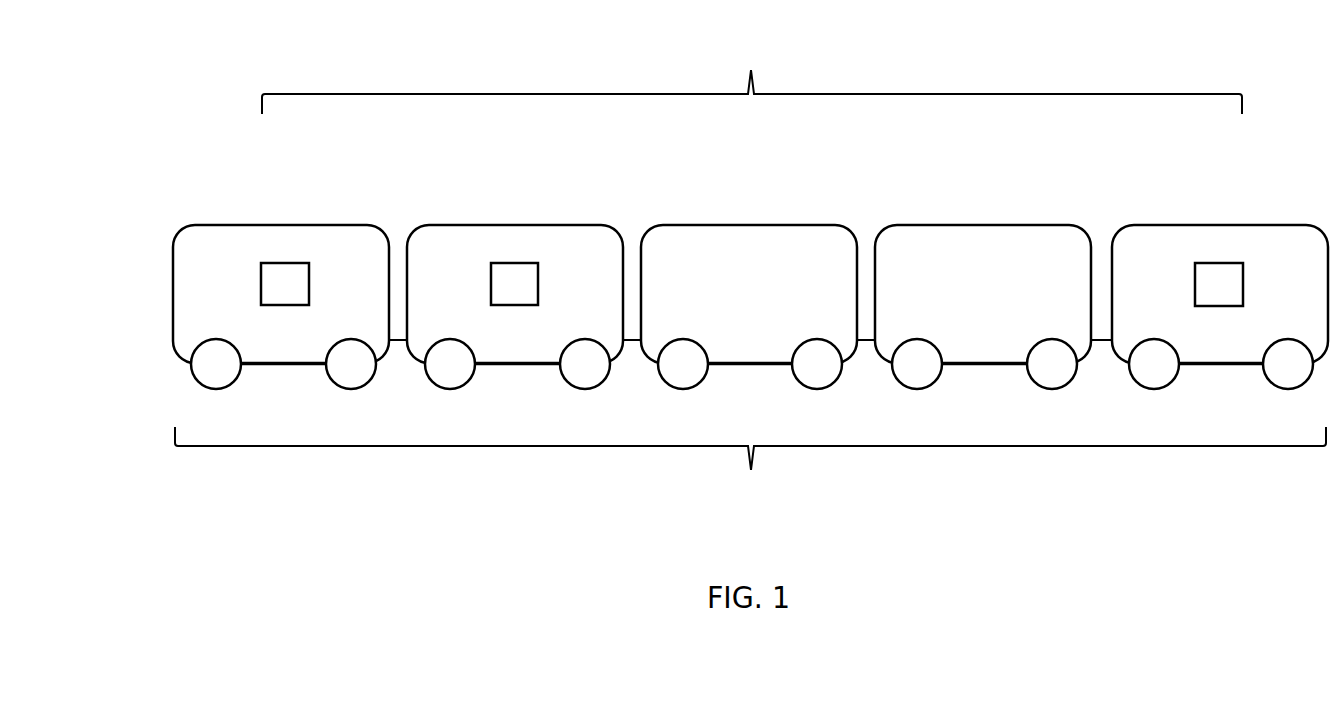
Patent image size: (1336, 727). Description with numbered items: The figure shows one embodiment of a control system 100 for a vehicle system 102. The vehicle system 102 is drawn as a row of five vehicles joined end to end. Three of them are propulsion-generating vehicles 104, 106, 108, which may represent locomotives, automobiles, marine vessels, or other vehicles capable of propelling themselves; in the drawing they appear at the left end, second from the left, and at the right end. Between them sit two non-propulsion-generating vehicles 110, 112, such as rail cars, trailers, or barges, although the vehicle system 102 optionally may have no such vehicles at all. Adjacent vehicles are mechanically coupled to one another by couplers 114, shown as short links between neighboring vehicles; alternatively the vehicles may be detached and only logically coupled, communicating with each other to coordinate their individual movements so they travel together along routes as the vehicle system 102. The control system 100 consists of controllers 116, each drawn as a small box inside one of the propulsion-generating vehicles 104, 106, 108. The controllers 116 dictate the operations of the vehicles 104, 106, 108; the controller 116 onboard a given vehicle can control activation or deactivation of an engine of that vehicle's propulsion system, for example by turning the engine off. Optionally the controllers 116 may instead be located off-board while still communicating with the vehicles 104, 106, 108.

The control system 100 is at (752, 71).
The vehicle system 102 is at (750, 475).
The propulsion-generating vehicle 104 is at (221, 223).
The propulsion-generating vehicle 106 is at (456, 223).
The propulsion-generating vehicle 108 is at (1160, 223).
The non-propulsion-generating vehicle 110 is at (692, 223).
The non-propulsion-generating vehicle 112 is at (966, 223).
The coupler 114 is at (862, 343).
The controller 116 is at (261, 287).